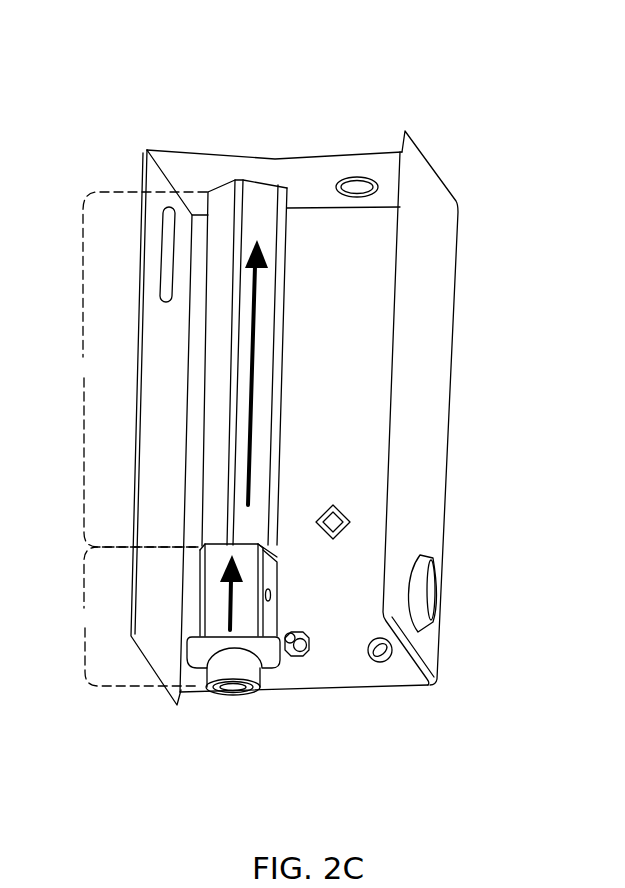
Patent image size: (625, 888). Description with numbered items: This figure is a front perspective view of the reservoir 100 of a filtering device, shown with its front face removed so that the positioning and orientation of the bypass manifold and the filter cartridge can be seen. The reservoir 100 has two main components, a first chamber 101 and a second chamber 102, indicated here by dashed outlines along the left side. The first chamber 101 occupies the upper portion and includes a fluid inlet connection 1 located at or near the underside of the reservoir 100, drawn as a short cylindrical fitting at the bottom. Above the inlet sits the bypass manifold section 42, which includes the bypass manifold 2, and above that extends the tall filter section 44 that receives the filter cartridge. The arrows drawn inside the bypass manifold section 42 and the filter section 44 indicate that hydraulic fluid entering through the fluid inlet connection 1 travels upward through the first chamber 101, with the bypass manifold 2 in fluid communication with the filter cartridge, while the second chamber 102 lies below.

The reservoir 100 is at (287, 70).
The first chamber 101 is at (83, 357).
The second chamber 102 is at (84, 608).
The filter section 44 is at (250, 521).
The bypass manifold section 42 is at (266, 563).
The bypass manifold 2 is at (280, 598).
The fluid inlet connection 1 is at (233, 690).